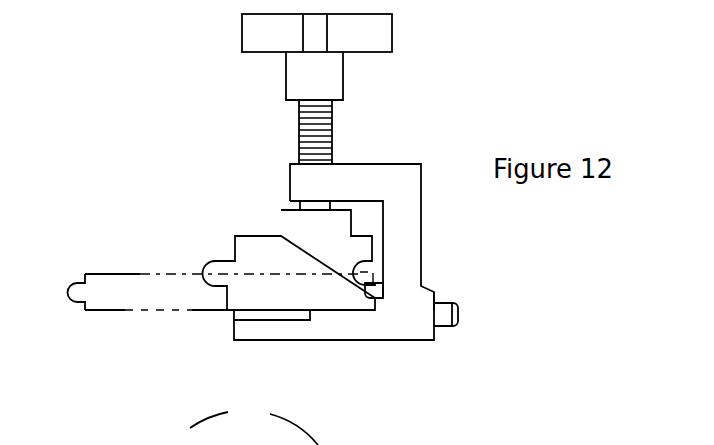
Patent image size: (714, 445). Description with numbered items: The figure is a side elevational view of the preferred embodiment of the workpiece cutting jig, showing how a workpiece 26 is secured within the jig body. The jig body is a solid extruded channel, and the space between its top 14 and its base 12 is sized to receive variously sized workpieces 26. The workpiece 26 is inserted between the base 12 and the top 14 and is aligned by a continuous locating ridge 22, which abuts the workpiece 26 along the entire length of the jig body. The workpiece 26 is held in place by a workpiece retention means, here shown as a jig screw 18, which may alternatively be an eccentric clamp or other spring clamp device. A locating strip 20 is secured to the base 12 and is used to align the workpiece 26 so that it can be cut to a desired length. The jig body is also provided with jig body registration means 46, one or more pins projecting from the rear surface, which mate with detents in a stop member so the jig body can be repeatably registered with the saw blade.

The base 12 is at (260, 330).
The top 14 is at (300, 187).
The jig screw 18 is at (332, 128).
The locating strip 20 is at (258, 313).
The locating ridge 22 is at (382, 293).
The workpiece 26 is at (250, 247).
The jig body registration means 46 is at (442, 312).